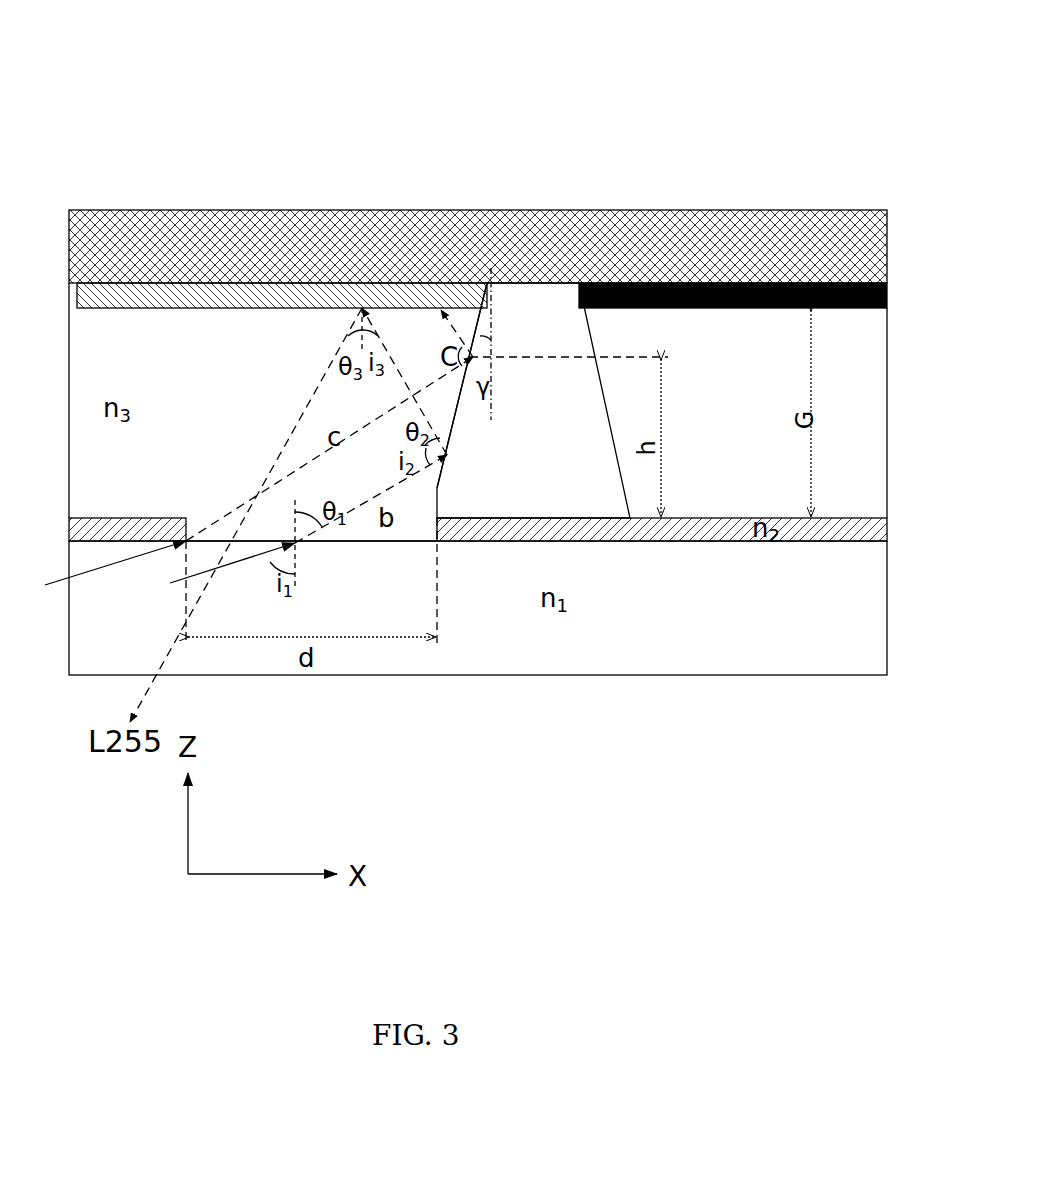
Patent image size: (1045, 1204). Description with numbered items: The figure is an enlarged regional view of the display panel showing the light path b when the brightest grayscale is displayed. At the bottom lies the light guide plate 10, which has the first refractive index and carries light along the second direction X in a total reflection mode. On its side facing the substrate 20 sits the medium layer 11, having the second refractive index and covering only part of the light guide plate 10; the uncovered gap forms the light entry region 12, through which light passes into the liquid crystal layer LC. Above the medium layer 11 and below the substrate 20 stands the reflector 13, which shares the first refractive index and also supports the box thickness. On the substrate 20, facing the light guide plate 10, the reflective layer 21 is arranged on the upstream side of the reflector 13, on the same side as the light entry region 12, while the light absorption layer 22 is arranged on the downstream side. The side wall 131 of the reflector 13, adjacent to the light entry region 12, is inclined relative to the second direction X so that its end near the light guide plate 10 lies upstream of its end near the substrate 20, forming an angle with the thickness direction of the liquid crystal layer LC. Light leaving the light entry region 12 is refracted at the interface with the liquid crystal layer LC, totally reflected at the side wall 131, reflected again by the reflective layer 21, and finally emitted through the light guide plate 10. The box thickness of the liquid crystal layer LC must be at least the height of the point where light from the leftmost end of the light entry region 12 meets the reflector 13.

The light guide plate 10 is at (762, 640).
The medium layer 11 is at (728, 530).
The light entry region 12 is at (352, 538).
The reflector 13 is at (515, 498).
The side wall 131 is at (441, 490).
The substrate 20 is at (763, 250).
The reflective layer 21 is at (330, 295).
The light absorption layer 22 is at (610, 283).
The liquid crystal layer LC is at (187, 380).